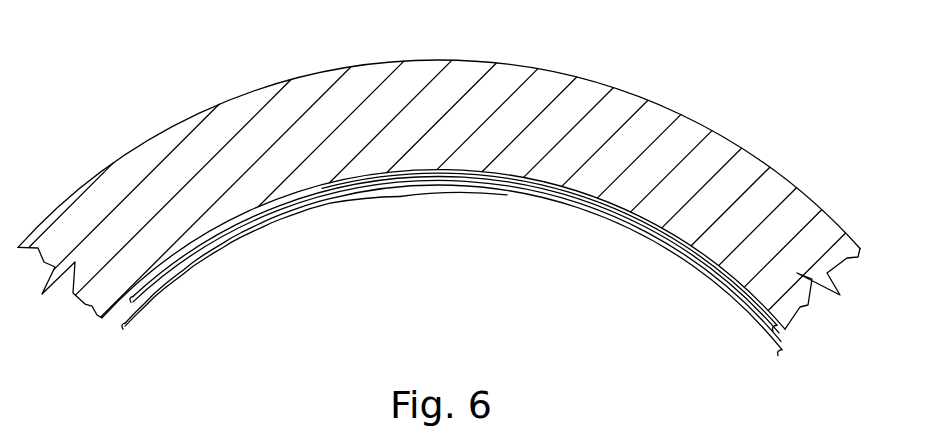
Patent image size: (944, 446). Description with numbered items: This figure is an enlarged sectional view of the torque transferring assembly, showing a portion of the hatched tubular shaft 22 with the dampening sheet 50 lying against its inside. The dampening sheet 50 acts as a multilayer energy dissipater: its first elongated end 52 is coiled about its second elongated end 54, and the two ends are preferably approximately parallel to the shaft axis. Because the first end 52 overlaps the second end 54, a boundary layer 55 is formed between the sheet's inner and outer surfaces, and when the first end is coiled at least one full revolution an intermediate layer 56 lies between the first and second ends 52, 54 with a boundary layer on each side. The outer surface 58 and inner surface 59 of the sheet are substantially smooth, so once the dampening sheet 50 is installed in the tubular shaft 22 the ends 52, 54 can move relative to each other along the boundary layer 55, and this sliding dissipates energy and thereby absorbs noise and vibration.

The tubular shaft 22 is at (741, 178).
The dampening sheet 50 is at (452, 186).
The first elongated end 52 is at (318, 186).
The second elongated end 54 is at (507, 195).
The boundary layer 55 is at (377, 188).
The intermediate layer 56 is at (425, 182).
The outer surface 58 is at (277, 206).
The inner surface 59 is at (240, 238).